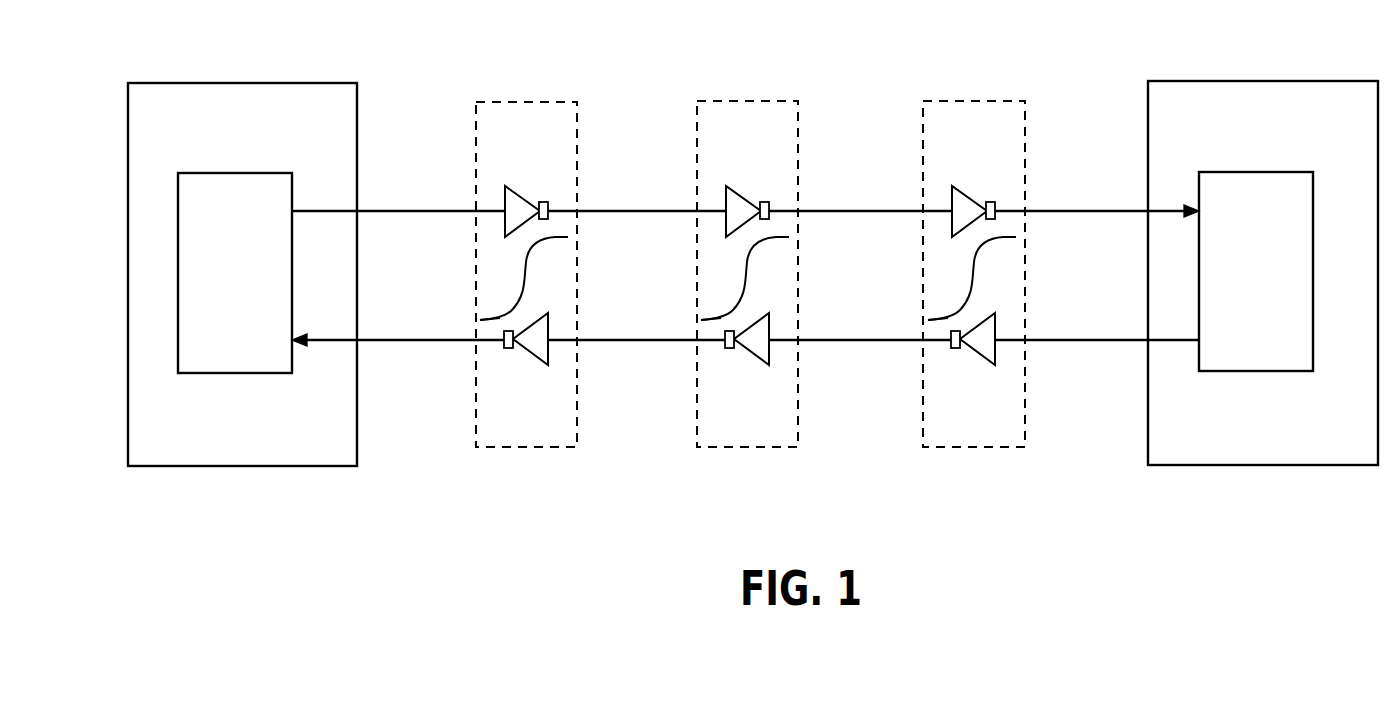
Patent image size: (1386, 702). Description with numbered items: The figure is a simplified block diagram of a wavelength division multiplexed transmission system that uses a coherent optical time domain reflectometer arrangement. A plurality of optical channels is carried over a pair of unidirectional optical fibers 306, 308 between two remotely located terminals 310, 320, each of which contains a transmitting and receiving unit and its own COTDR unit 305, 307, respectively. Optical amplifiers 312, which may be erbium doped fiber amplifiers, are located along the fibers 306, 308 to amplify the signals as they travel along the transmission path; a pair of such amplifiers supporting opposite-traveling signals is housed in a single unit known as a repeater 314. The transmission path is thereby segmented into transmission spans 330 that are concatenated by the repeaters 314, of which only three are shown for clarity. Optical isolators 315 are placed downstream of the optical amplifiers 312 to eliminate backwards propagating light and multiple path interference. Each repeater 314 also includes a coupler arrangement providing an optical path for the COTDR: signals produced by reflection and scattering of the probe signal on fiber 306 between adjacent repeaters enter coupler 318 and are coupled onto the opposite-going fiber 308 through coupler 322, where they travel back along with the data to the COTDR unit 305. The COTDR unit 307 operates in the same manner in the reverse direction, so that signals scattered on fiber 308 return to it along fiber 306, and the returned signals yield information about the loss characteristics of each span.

The COTDR unit 305 is at (238, 173).
The optical fiber 306 is at (418, 211).
The COTDR unit 307 is at (1253, 172).
The optical fiber 308 is at (418, 340).
The terminal 310 is at (245, 83).
The optical amplifier 312 is at (530, 200).
The repeater 314 is at (534, 100).
The optical isolator 315 is at (546, 202).
The coupler 318 is at (553, 239).
The terminal 320 is at (1262, 81).
The coupler 322 is at (500, 313).
The transmission span 330 is at (426, 91).